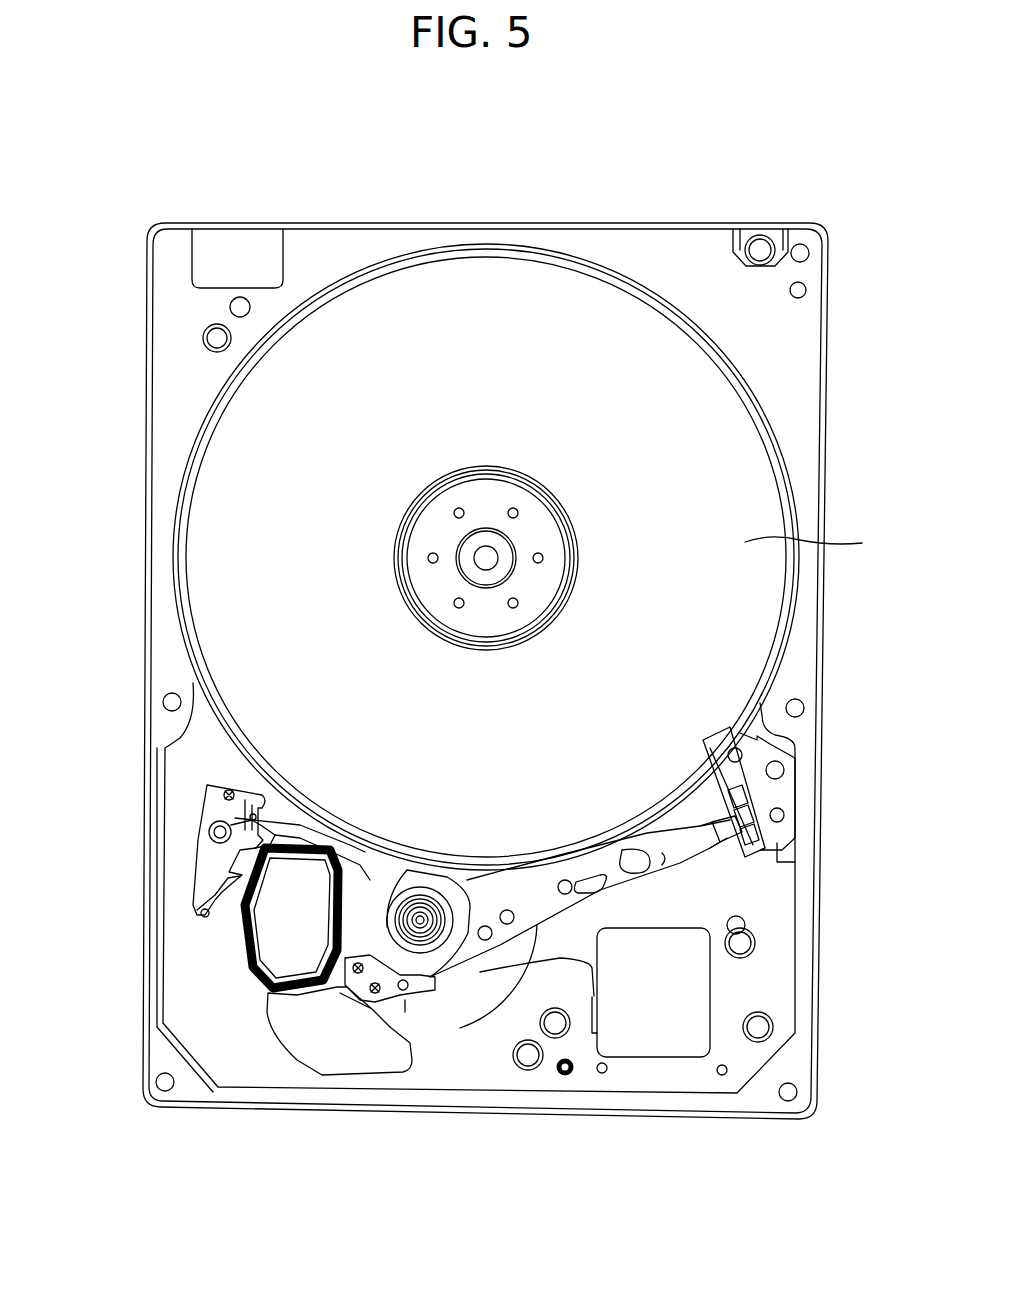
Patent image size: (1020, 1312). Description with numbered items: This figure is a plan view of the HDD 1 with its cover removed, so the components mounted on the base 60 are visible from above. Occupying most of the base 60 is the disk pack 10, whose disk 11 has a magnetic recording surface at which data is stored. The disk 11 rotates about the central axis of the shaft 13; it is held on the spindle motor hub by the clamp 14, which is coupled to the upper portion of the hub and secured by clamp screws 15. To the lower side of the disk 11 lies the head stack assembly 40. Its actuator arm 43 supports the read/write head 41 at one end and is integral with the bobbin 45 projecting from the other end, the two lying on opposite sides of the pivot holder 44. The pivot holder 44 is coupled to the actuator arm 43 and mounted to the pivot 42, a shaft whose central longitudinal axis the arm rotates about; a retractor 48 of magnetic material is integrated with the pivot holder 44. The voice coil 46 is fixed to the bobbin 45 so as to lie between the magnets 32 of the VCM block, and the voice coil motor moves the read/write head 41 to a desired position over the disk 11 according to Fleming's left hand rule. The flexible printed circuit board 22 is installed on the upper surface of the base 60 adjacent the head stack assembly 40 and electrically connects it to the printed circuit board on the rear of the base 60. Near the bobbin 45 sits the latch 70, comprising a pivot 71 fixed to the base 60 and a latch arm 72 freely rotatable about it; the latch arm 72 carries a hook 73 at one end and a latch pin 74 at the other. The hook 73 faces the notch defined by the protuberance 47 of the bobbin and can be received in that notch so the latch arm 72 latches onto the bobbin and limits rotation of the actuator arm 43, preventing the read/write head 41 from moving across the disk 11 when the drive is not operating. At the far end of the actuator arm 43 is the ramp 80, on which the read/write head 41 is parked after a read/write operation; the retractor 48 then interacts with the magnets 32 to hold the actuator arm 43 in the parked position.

The HDD 1 is at (92, 140).
The disk pack 10 is at (788, 487).
The disk 11 is at (821, 540).
The shaft 13 is at (486, 560).
The clamp 14 is at (560, 600).
The clamp screws 15 is at (513, 605).
The flexible printed circuit board 22 is at (401, 1006).
The magnets 32 is at (337, 982).
The head stack assembly 40 is at (571, 997).
The read/write head 41 is at (722, 827).
The pivot 42 is at (421, 935).
The actuator arm 43 is at (620, 883).
The pivot holder 44 is at (380, 1016).
The bobbin 45 is at (250, 952).
The voice coil 46 is at (243, 973).
The protuberance 47 is at (237, 868).
The retractor 48 is at (362, 975).
The base 60 is at (836, 378).
The latch 70 is at (190, 790).
The pivot 71 is at (262, 826).
The latch arm 72 is at (203, 857).
The hook 73 is at (197, 910).
The latch pin 74 is at (225, 792).
The ramp 80 is at (808, 790).